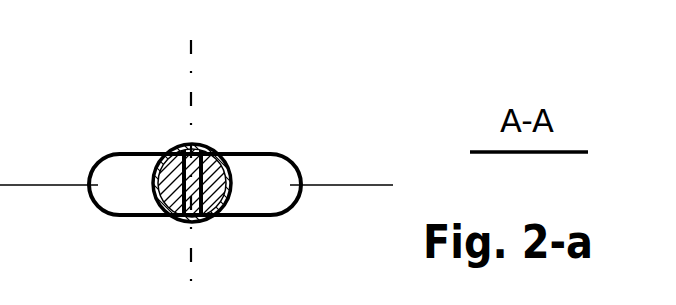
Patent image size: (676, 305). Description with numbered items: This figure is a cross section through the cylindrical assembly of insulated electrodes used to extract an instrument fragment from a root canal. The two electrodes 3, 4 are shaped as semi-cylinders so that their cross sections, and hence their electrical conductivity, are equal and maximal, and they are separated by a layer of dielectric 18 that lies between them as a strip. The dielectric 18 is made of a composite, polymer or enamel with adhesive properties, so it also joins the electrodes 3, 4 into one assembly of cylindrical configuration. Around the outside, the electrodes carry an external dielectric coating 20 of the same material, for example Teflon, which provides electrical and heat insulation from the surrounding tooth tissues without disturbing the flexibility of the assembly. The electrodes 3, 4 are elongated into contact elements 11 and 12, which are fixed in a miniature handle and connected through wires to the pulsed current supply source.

The electrode 3 is at (170, 156).
The electrode 4 is at (213, 155).
The contact element 11 is at (150, 172).
The contact element 12 is at (341, 157).
The dielectric 18 is at (208, 213).
The external dielectric coating 20 is at (168, 207).